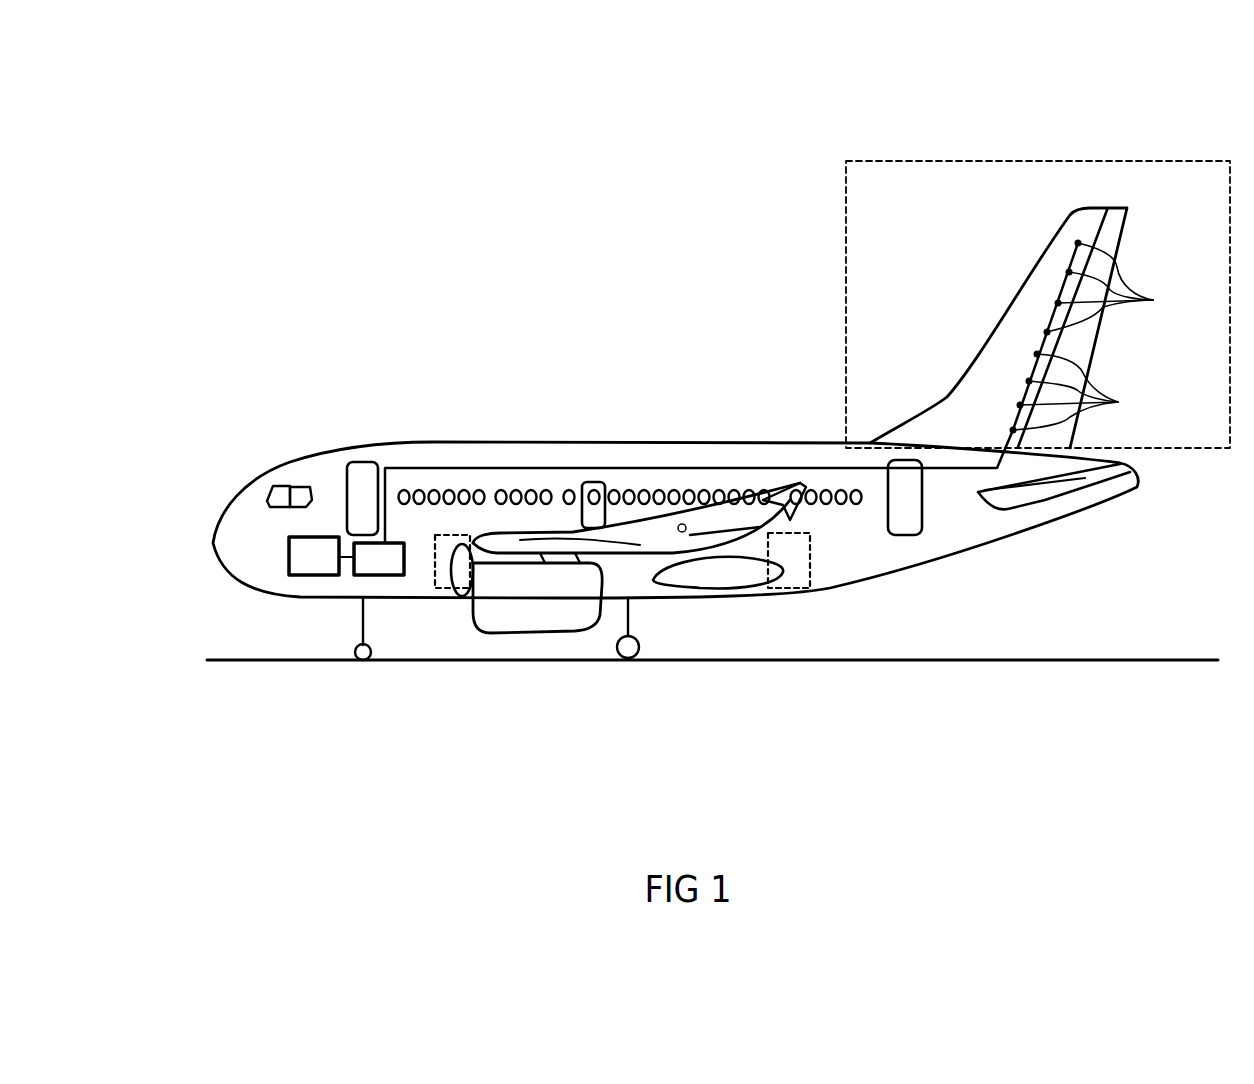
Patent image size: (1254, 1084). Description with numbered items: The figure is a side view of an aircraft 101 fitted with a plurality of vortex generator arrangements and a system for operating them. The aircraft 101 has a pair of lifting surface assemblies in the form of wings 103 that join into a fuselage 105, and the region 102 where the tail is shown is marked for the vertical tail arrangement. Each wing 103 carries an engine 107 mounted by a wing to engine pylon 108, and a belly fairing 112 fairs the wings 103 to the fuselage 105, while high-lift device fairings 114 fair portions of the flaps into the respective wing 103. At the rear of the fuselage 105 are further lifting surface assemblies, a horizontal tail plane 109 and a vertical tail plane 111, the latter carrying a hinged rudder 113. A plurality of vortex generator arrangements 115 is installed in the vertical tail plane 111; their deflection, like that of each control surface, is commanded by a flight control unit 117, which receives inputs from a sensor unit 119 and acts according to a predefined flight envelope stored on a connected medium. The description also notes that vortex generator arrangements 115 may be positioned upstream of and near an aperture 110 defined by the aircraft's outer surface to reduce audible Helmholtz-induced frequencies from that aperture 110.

The aircraft 101 is at (499, 383).
The vertical tail / fin 102 is at (925, 360).
The wing 103 is at (633, 543).
The fuselage 105 is at (637, 437).
The engine 107 is at (520, 617).
The wing to engine pylon 108 is at (583, 563).
The horizontal tail plane 109 is at (1058, 487).
The aperture 110 is at (686, 532).
The vertical tail plane 111 is at (1006, 232).
The belly fairing 112 is at (757, 573).
The rudder 113 is at (1127, 218).
The high-lift device fairing 114 is at (760, 527).
The vortex generator arrangement 115 is at (1112, 337).
The flight control unit 117 is at (378, 577).
The sensor unit 119 is at (320, 578).